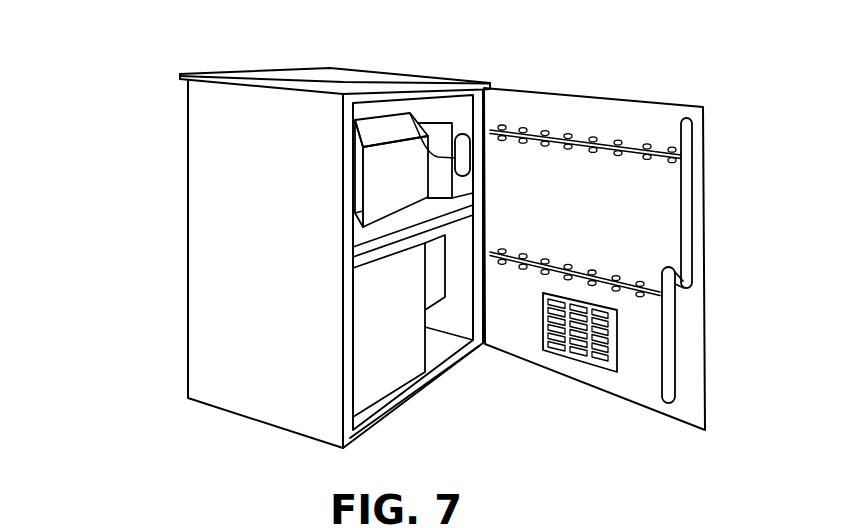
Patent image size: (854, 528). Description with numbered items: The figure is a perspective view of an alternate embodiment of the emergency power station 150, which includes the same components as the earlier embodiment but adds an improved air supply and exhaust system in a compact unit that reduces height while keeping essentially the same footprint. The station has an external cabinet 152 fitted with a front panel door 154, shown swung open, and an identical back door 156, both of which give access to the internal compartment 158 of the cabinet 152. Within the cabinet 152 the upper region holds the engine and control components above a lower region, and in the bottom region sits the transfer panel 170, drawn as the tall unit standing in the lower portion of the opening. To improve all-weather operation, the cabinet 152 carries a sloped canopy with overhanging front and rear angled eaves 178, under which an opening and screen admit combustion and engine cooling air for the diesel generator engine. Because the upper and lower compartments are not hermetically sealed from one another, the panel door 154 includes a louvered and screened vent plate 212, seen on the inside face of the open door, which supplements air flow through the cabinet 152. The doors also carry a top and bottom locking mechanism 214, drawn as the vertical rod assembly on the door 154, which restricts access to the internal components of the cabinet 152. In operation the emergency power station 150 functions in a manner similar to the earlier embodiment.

The emergency power station 150 is at (316, 243).
The external cabinet 152 is at (188, 251).
The front panel door 154 is at (638, 244).
The back door 156 is at (188, 181).
The internal compartment 158 is at (418, 110).
The transfer panel 170 is at (383, 384).
The angled eaves 178 is at (180, 77).
The louvered and screened vent plate 212 is at (566, 367).
The top and bottom locking mechanism 214 is at (694, 218).